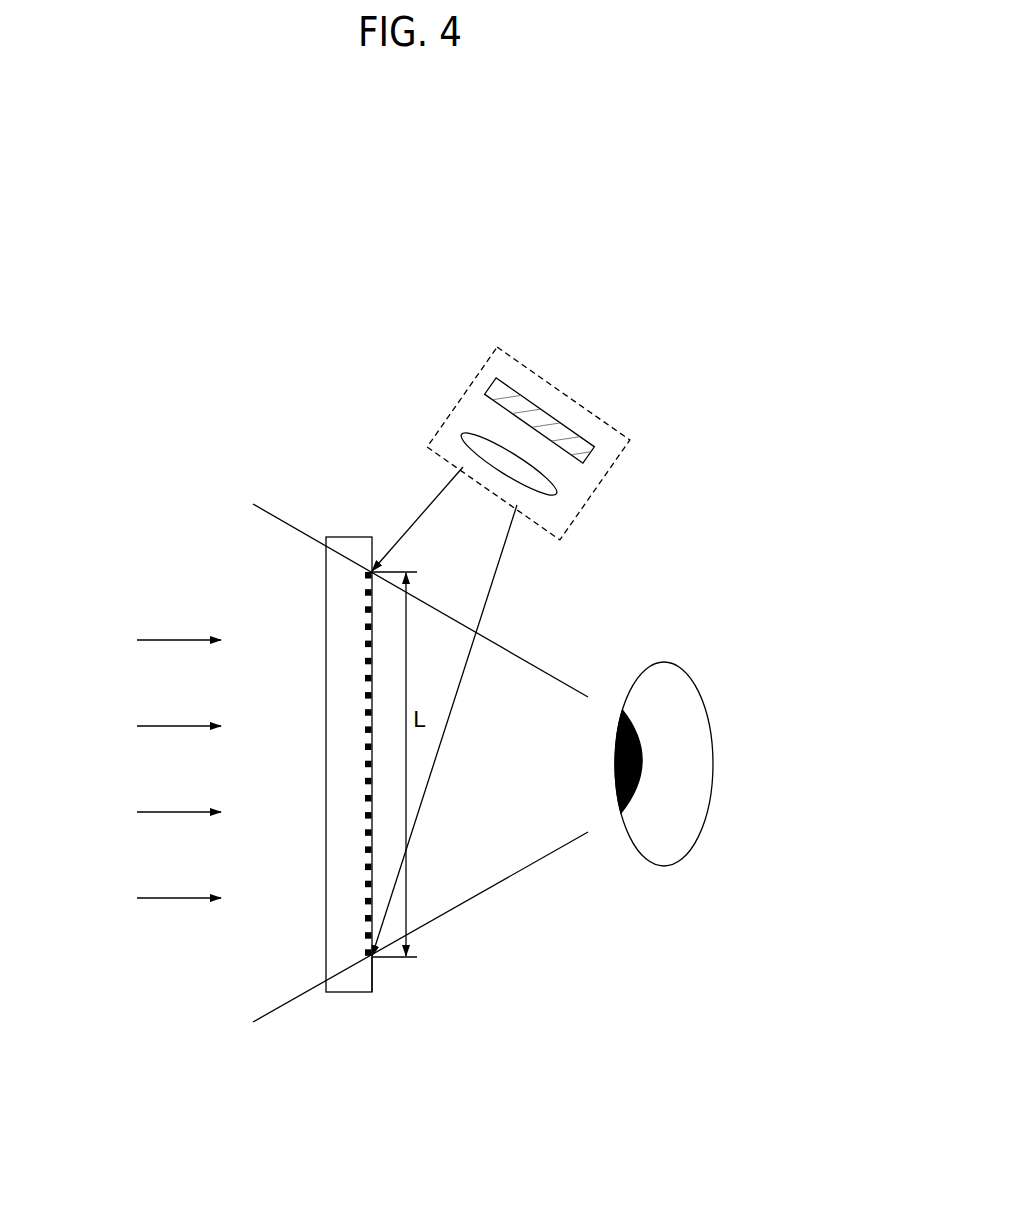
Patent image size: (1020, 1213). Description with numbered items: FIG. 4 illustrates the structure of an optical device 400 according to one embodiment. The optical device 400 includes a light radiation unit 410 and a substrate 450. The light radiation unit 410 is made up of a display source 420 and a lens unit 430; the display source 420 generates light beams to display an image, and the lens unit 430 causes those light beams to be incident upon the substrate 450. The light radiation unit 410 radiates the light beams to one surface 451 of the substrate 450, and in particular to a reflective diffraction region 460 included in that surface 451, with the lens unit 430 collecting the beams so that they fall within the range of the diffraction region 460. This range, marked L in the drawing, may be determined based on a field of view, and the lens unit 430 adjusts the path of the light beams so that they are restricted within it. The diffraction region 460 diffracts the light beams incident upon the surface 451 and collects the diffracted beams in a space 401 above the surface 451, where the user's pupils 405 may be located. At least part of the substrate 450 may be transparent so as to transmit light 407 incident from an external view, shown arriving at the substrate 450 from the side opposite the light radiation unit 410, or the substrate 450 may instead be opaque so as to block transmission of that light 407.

The optical device 400 is at (376, 326).
The space 401 is at (615, 780).
The user's pupils 405 is at (697, 765).
The light incident from an external view 407 is at (168, 640).
The light radiation unit 410 is at (527, 370).
The display source 420 is at (491, 390).
The lens unit 430 is at (464, 436).
The substrate 450 is at (337, 922).
The surface 451 is at (373, 977).
The diffraction region 460 is at (372, 646).